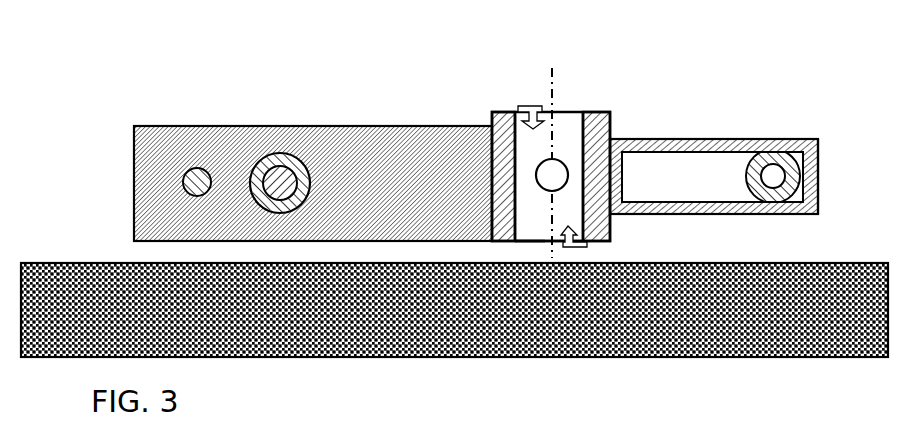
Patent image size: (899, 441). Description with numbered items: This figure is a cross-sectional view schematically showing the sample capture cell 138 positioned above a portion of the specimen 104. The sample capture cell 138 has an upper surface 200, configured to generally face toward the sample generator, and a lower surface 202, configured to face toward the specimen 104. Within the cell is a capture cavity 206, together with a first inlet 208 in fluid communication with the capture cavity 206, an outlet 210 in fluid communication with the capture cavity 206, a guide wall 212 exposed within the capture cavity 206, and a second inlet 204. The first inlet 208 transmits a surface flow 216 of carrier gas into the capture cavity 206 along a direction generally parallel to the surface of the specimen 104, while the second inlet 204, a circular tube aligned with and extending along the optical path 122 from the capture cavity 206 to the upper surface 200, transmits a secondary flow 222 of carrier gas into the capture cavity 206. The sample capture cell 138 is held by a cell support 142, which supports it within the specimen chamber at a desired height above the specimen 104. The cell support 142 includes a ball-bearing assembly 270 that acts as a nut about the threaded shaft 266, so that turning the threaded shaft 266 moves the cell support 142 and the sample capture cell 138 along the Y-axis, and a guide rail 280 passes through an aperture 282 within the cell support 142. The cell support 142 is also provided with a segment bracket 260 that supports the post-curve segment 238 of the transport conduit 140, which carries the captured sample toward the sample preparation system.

The specimen 104 is at (117, 271).
The cell support 142 is at (236, 112).
The aperture 282 is at (142, 136).
The guide rail 280 is at (186, 189).
The threaded shaft 266 is at (299, 137).
The ball-bearing assembly 270 is at (299, 168).
The upper surface 200 is at (450, 225).
The lower surface 202 is at (497, 241).
The second inlet 204 is at (579, 108).
The capture cavity 206 is at (566, 123).
The first inlet 208 is at (524, 250).
The guide wall 212 is at (517, 240).
The optical path 122 is at (551, 66).
The outlet 210 is at (545, 181).
The secondary flow 222 is at (528, 104).
The surface flow 216 is at (582, 244).
The sample capture cell 138 is at (739, 140).
The transport conduit 140 is at (797, 128).
The post-curve segment 238 is at (781, 150).
The segment bracket 260 is at (818, 157).